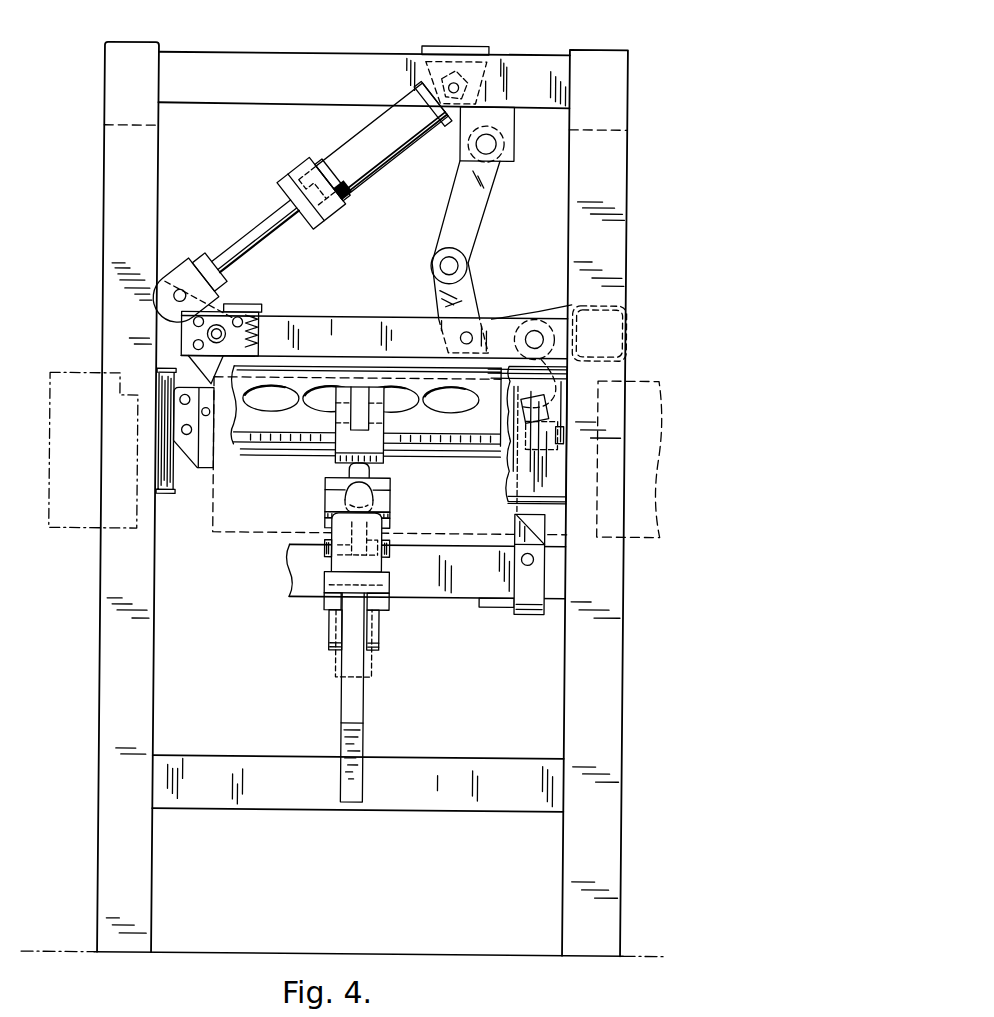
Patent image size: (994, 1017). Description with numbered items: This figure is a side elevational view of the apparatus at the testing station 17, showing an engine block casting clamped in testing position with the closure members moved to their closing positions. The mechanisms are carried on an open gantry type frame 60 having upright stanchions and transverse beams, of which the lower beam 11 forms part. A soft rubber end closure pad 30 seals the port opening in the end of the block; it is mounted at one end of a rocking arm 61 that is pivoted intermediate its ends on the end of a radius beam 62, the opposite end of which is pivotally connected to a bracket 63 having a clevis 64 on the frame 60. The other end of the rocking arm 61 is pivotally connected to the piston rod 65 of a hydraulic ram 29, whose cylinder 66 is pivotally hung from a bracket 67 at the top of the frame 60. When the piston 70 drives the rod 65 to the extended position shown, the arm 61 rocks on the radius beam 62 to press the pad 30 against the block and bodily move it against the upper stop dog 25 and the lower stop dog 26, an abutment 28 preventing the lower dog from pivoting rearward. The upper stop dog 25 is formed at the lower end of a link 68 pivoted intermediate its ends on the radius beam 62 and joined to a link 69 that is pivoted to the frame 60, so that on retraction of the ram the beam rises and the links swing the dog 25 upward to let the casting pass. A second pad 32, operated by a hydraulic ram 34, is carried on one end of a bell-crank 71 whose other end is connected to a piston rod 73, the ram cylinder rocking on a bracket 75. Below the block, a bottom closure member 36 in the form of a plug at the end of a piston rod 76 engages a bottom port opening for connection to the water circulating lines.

The lower cross beam 11 is at (430, 585).
The testing station 17 is at (213, 538).
The upper stop dog 25 is at (553, 397).
The lower stop dog 26 is at (528, 612).
The abutment 28 is at (496, 606).
The hydraulic ram 29 is at (386, 119).
The end closure pad 30 is at (213, 458).
The pad 32 is at (290, 452).
The hydraulic ram 34 is at (323, 553).
The bottom closure member 36 is at (392, 497).
The frame 60 is at (100, 262).
The rocking arm 61 is at (165, 333).
The radius beam 62 is at (349, 317).
The bracket 63 is at (615, 303).
The clevis 64 is at (553, 318).
The piston rod 65 is at (309, 191).
The cylinder 66 is at (436, 102).
The bracket 67 is at (453, 44).
The link 68 is at (470, 282).
The link 69 is at (490, 188).
The piston 70 is at (447, 131).
The bell-crank 71 is at (385, 440).
The piston rod 73 is at (372, 470).
The bracket 75 is at (363, 720).
The piston rod 76 is at (378, 548).